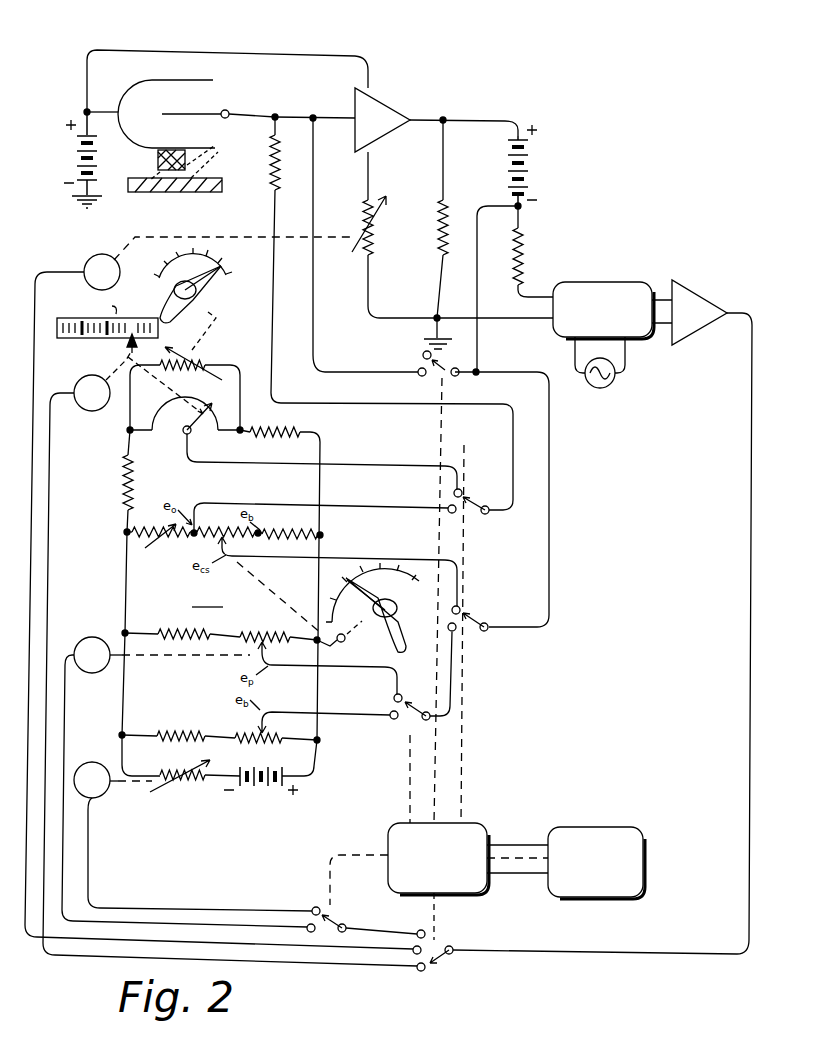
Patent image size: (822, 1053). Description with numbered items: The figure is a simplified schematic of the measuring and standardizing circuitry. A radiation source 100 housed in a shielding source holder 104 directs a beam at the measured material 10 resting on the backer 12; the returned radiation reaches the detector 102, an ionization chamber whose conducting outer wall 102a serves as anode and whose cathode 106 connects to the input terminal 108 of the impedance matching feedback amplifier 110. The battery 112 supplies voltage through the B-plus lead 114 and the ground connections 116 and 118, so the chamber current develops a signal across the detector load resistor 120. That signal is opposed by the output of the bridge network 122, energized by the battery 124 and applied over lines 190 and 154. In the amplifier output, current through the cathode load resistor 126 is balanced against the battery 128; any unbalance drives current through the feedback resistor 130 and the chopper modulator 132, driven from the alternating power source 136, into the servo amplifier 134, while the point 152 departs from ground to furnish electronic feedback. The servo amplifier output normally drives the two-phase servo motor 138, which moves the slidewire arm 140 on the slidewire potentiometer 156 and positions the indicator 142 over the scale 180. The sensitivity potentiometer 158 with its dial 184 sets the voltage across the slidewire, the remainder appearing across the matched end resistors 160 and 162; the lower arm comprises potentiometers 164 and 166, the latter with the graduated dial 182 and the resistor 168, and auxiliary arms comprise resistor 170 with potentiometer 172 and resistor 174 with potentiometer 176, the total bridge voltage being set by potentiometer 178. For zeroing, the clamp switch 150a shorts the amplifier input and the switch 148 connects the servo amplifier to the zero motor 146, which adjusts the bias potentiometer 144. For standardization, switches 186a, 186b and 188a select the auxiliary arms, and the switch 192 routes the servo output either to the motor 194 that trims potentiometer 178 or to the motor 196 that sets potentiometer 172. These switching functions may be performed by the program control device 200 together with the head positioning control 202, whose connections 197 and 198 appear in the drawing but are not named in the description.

The measured material 10 is at (210, 178).
The backer 12 is at (150, 192).
The radiation source 100 is at (157, 171).
The detector 102 is at (121, 93).
The conducting outer wall 102a is at (196, 80).
The source holder 104 is at (157, 158).
The cathode 106 is at (222, 111).
The input terminal 108 is at (341, 116).
The impedance matching feedback amplifier 110 is at (390, 100).
The battery 112 is at (72, 157).
The B+ lead 114 is at (278, 50).
The ground connection 116 is at (70, 198).
The ground connection 118 is at (430, 338).
The detector load resistor 120 is at (281, 170).
The bridge network 122 is at (208, 597).
The battery 124 is at (264, 790).
The cathode load resistor 126 is at (437, 236).
The battery 128 is at (530, 158).
The feedback resistor 130 is at (528, 254).
The chopper modulator 132 is at (606, 282).
The A.C. servo amplifier 134 is at (700, 292).
The A.C. power source 136 is at (612, 382).
The servo motor 138 is at (76, 381).
The slidewire potentiometer arm 140 is at (195, 436).
The measuring indicator 142 is at (128, 343).
The potentiometer 144 is at (363, 230).
The zero motor 146 is at (86, 258).
The switch 148 is at (452, 962).
The clamp switch 150a is at (443, 368).
The point 152 is at (524, 208).
The line 154 is at (551, 495).
The slidewire potentiometer 156 is at (212, 412).
The potentiometer 158 is at (210, 363).
The end resistor 160 is at (290, 430).
The end resistor 162 is at (122, 473).
The potentiometer 164 is at (160, 540).
The potentiometer 166 is at (228, 536).
The resistor 168 is at (287, 532).
The resistor 170 is at (178, 630).
The potentiometer 172 is at (266, 633).
The resistor 174 is at (172, 731).
The potentiometer 176 is at (258, 731).
The potentiometer 178 is at (185, 785).
The scale 180 is at (72, 318).
The graduated dial 182 is at (369, 578).
The graduated dial 184 is at (203, 276).
The switch 186a is at (470, 498).
The switch 186b is at (473, 620).
The switch 188a is at (413, 718).
The line 190 is at (350, 402).
The switch 192 is at (341, 918).
The servo motor 194 is at (102, 800).
The servo motor 196 is at (86, 640).
The control line 197 is at (437, 912).
The control line 198 is at (324, 878).
The program control device 200 is at (488, 825).
The head positioning control system 202 is at (638, 830).